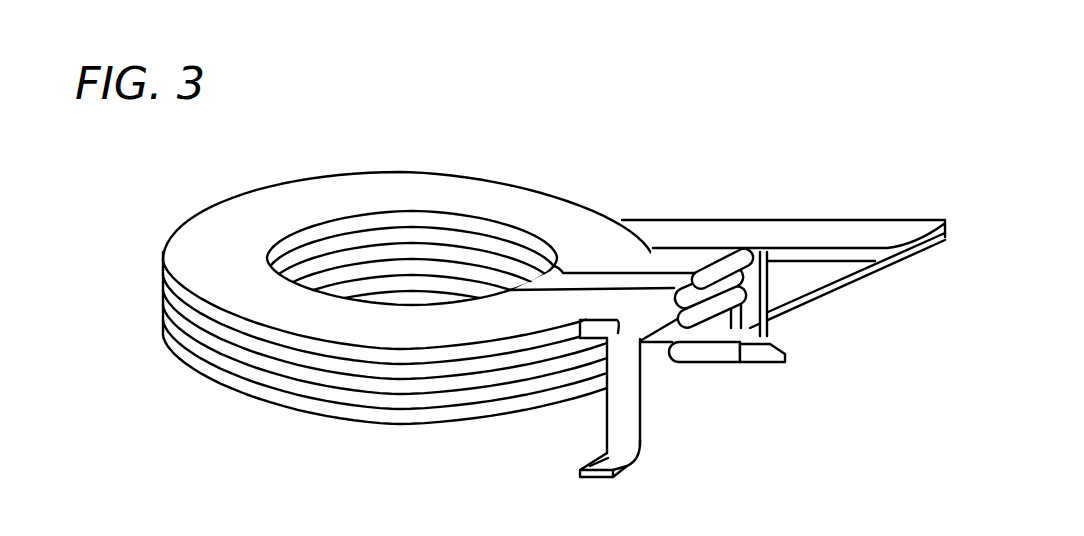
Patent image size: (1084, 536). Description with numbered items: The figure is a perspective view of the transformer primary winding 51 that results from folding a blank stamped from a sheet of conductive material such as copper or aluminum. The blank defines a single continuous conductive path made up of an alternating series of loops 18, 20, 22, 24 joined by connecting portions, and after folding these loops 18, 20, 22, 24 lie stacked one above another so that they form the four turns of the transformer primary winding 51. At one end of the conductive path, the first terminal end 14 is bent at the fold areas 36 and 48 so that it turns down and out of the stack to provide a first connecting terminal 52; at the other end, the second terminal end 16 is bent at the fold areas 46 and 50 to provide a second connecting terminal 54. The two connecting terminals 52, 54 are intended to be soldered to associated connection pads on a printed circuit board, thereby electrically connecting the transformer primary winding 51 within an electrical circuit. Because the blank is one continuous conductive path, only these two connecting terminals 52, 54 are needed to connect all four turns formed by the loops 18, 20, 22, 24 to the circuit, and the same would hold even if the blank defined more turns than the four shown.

The first terminal end 14 is at (645, 445).
The second terminal end 16 is at (772, 312).
The loop 18 is at (330, 198).
The loop 20 is at (402, 233).
The loop 22 is at (293, 398).
The loop 24 is at (248, 368).
The fold area 36 is at (623, 336).
The fold area 46 is at (786, 249).
The fold area 48 is at (617, 453).
The fold area 50 is at (752, 364).
The transformer primary winding 51 is at (594, 189).
The first connecting terminal 52 is at (623, 471).
The second connecting terminal 54 is at (768, 363).